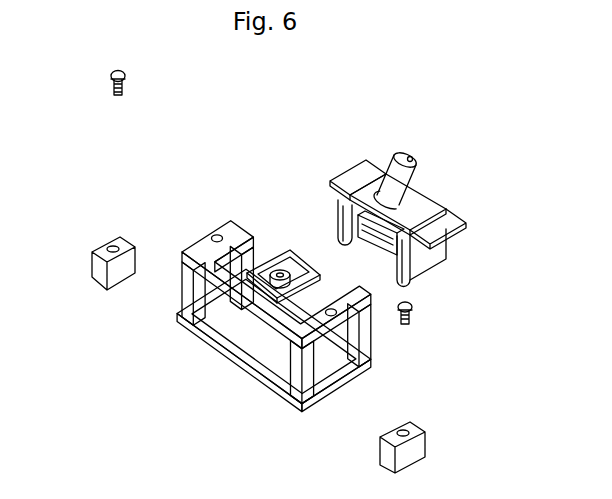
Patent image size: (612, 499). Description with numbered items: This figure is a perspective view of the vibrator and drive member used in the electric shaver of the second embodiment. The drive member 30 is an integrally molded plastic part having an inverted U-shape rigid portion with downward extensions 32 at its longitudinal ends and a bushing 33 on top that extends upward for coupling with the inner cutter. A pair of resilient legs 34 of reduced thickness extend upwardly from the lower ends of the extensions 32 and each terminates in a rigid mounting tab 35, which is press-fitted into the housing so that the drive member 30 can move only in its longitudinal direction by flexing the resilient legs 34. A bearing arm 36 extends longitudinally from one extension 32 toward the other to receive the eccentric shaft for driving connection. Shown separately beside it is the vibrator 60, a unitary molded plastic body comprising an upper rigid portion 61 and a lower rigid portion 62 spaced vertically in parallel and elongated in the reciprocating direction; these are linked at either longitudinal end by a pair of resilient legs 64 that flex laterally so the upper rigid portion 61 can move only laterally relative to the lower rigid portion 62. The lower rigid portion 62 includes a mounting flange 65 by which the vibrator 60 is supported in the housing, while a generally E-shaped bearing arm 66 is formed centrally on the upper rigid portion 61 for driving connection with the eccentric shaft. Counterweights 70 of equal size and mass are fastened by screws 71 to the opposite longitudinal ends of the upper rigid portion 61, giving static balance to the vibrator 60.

The drive member 30 is at (435, 195).
The downward extension 32 is at (355, 247).
The bushing 33 is at (408, 155).
The resilient leg 34 is at (337, 207).
The mounting tab 35 is at (347, 172).
The bearing arm 36 is at (378, 252).
The vibrator 60 is at (207, 233).
The upper rigid portion 61 is at (245, 300).
The lower rigid portion 62 is at (262, 357).
The resilient leg 64 is at (185, 293).
The mounting flange 65 is at (276, 383).
The bearing arm 66 is at (291, 250).
The counterweight 70 is at (118, 289).
The screw 71 is at (127, 77).